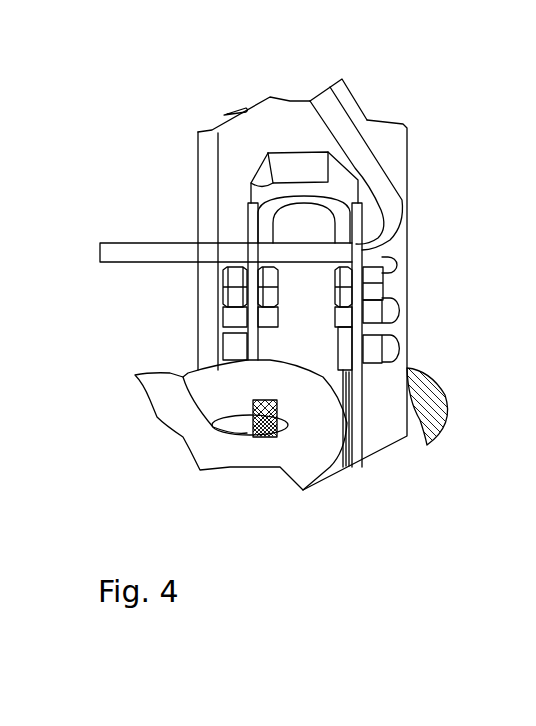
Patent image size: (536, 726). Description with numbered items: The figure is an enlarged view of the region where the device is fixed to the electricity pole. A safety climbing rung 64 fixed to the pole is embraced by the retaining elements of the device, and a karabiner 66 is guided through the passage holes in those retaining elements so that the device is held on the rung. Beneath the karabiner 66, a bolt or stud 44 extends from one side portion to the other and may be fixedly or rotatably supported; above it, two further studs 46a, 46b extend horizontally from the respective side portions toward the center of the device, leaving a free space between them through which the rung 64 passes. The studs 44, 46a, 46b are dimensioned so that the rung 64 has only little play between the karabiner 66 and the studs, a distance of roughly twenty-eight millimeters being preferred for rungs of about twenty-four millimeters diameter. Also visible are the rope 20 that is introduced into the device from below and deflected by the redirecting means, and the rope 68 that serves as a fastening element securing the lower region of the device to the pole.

The karabiner 66 is at (370, 170).
The stud 46a is at (262, 283).
The stud 46b is at (355, 283).
The bolt or stud 44 is at (387, 313).
The safety climbing rung 64 is at (158, 393).
The rope 68 is at (440, 395).
The rope 20 is at (247, 433).